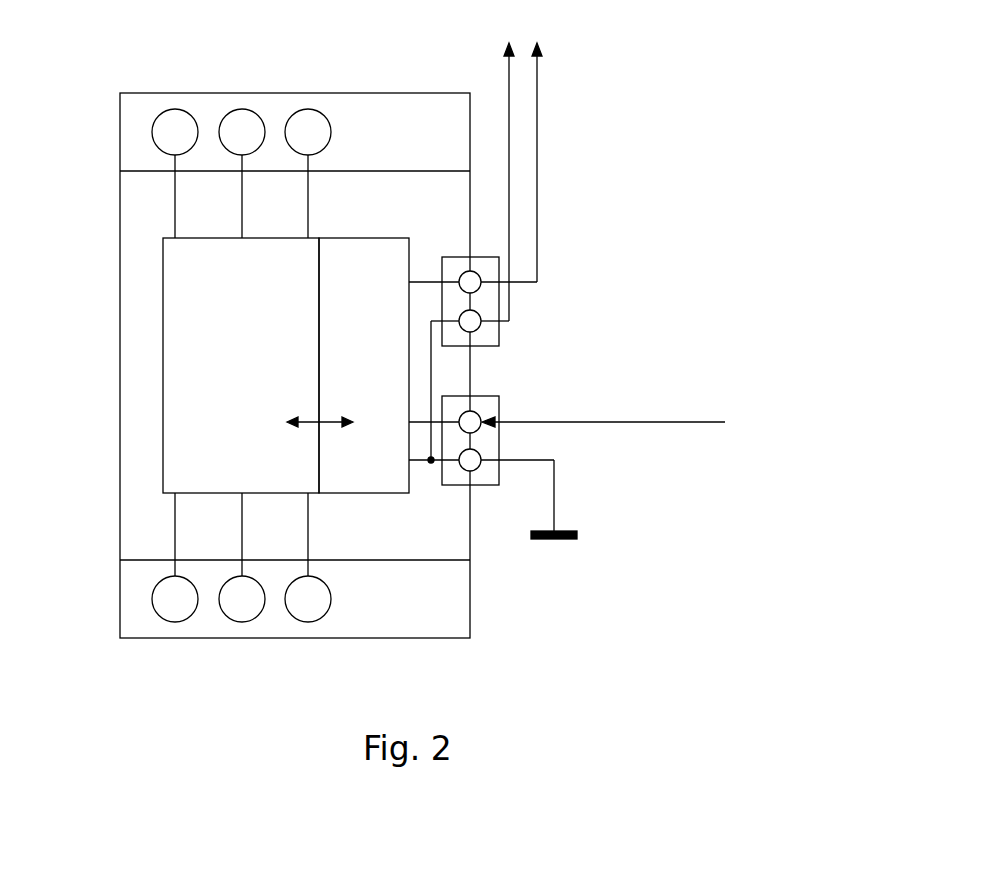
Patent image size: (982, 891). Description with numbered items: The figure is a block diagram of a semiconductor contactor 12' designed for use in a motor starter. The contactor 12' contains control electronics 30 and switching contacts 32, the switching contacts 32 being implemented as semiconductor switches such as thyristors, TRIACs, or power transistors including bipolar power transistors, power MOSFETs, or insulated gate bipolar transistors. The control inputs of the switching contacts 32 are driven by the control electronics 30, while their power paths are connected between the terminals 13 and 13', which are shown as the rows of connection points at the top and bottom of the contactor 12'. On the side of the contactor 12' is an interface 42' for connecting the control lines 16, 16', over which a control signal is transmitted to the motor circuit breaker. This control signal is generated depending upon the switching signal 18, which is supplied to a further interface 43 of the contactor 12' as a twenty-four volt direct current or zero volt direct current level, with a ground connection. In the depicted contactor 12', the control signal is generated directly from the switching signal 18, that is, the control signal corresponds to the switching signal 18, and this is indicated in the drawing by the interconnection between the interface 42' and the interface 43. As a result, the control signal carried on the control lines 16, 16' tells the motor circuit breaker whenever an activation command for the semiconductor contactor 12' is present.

The semiconductor contactor 12' is at (250, 365).
The terminal 13 is at (190, 173).
The terminal 13' is at (181, 563).
The control electronics 30 is at (358, 247).
The switching contacts 32 is at (180, 307).
The control line 16 is at (564, 162).
The control line 16' is at (568, 182).
The interface 42' is at (511, 358).
The interface 43 is at (488, 438).
The switching signal 18 is at (653, 420).